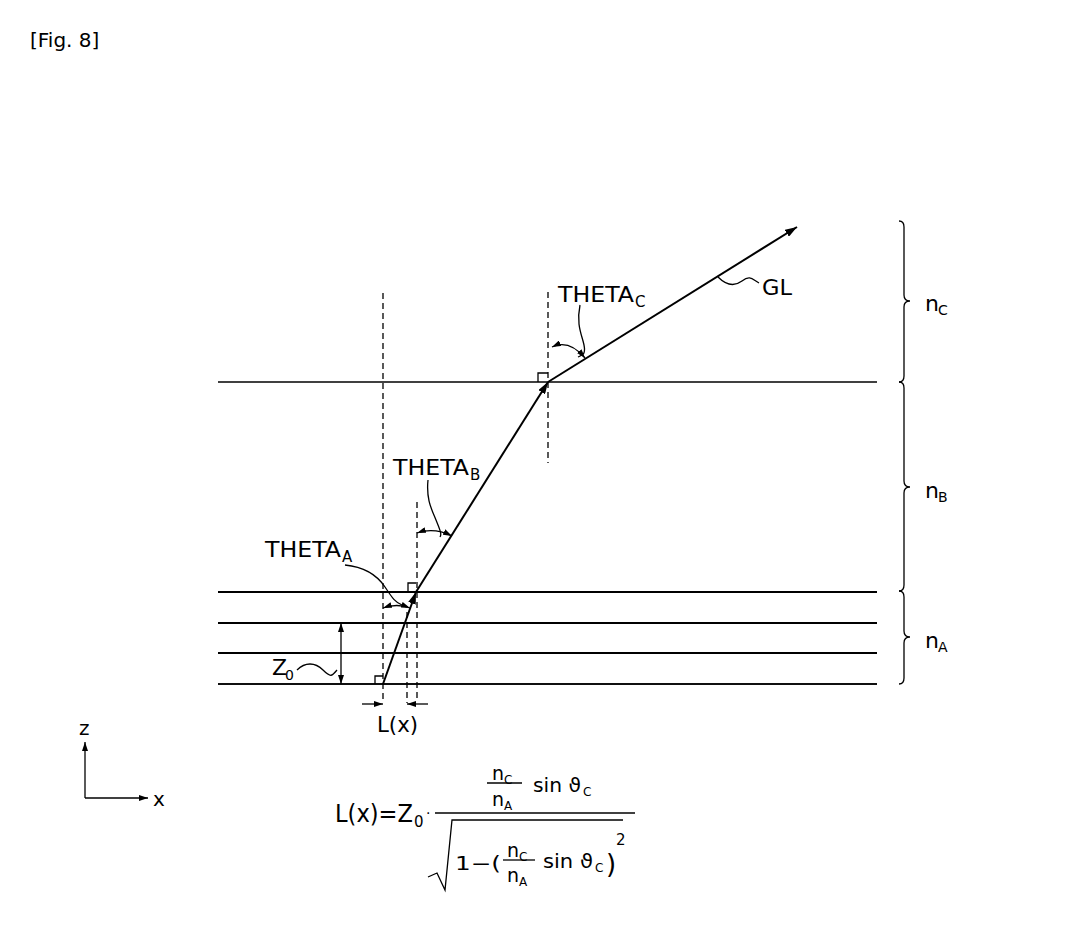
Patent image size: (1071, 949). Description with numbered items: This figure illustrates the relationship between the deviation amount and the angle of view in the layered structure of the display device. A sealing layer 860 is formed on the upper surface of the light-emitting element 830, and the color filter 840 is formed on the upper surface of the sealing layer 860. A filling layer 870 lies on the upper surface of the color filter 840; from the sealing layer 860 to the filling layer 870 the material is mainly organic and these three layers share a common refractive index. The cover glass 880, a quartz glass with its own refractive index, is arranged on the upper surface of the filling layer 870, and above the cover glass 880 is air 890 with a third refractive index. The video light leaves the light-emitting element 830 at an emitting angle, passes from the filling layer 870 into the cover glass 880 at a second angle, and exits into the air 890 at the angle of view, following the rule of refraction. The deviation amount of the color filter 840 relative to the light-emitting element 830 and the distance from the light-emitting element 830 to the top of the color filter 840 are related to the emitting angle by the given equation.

The light-emitting element 830 is at (228, 705).
The color filter 840 is at (228, 636).
The sealing layer 860 is at (228, 670).
The filling layer 870 is at (228, 603).
The cover glass 880 is at (228, 493).
The air 890 is at (228, 340).